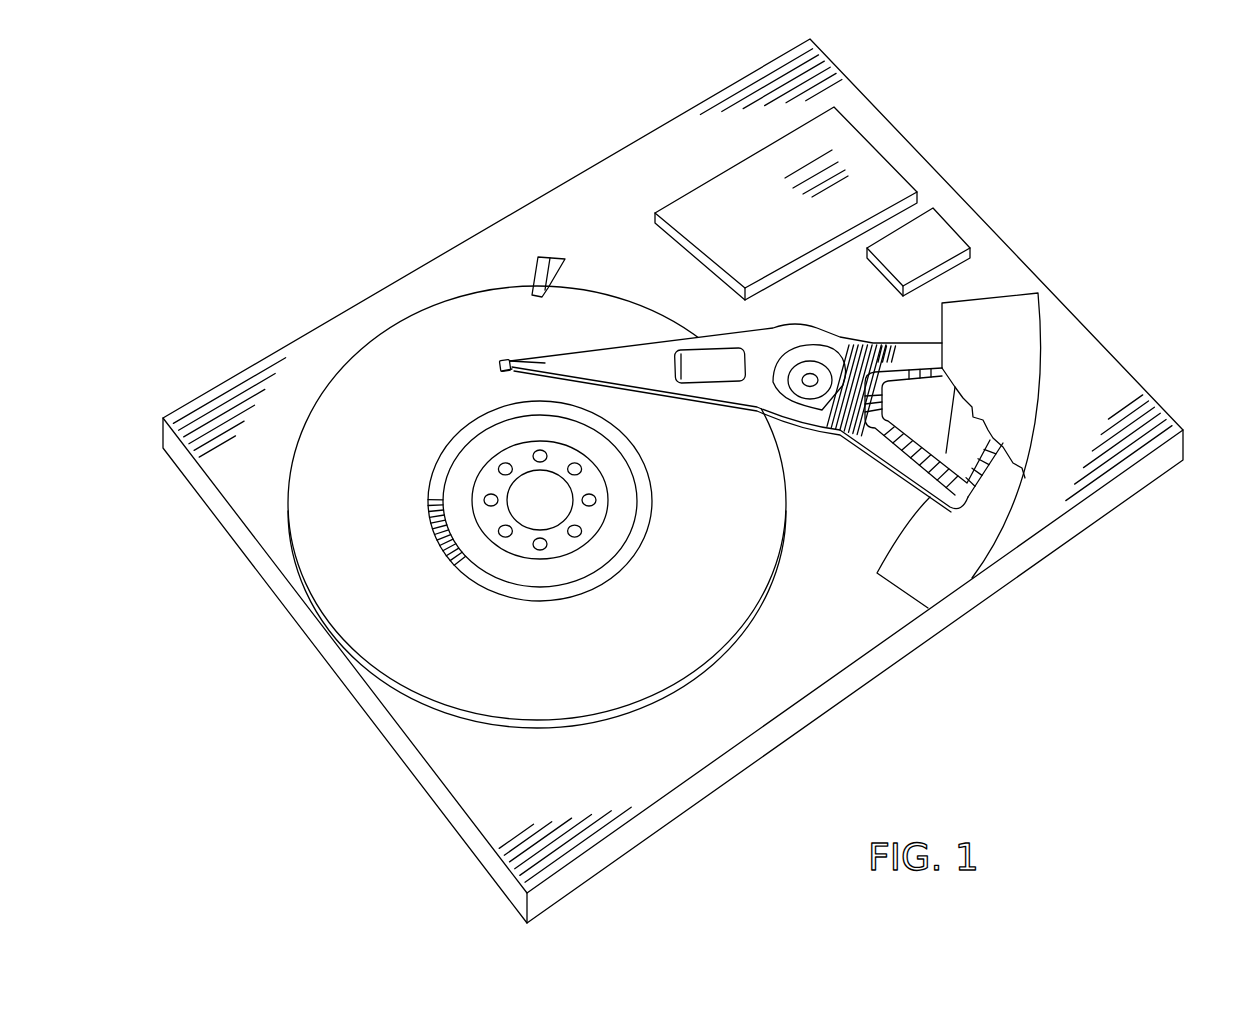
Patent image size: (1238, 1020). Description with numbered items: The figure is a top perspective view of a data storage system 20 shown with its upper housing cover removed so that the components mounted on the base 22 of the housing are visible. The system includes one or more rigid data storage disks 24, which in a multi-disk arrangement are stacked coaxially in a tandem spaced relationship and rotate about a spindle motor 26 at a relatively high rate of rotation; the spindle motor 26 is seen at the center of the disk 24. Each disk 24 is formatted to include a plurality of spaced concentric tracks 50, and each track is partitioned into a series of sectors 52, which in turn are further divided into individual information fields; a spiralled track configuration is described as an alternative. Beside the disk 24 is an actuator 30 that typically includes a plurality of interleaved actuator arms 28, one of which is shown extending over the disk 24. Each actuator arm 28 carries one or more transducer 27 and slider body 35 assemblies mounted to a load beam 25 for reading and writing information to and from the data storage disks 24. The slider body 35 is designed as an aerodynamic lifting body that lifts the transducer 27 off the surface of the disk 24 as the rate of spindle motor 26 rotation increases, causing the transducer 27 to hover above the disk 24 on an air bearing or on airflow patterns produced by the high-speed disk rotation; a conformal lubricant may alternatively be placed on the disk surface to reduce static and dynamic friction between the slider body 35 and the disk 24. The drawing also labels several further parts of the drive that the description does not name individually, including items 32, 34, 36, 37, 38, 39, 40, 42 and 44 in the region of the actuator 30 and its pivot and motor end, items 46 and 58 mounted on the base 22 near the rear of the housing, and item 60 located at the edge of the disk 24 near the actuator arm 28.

The data storage system 20 is at (993, 162).
The base 22 is at (847, 690).
The rigid data storage disk 24 is at (537, 507).
The load beam 25 is at (516, 370).
The spindle motor 26 is at (556, 531).
The transducer 27 is at (504, 373).
The actuator arm 28 is at (645, 368).
The actuator 30 is at (827, 428).
The pivot bearing 32 is at (810, 374).
The flex region 34 is at (868, 350).
The slider body 35 is at (501, 358).
The voice coil 36 is at (888, 387).
The arm lower surface 37 is at (798, 440).
The voice coil motor 38 is at (978, 446).
The coil support tail 39 is at (920, 503).
The magnet plate 40 is at (1030, 377).
The magnet plate edge 42 is at (899, 577).
The magnet gap 44 is at (1008, 476).
The electronics module 46 is at (786, 203).
The concentric track 50 is at (442, 452).
The sector 52 is at (430, 537).
The connector block 58 is at (918, 252).
The crash stop 60 is at (554, 257).